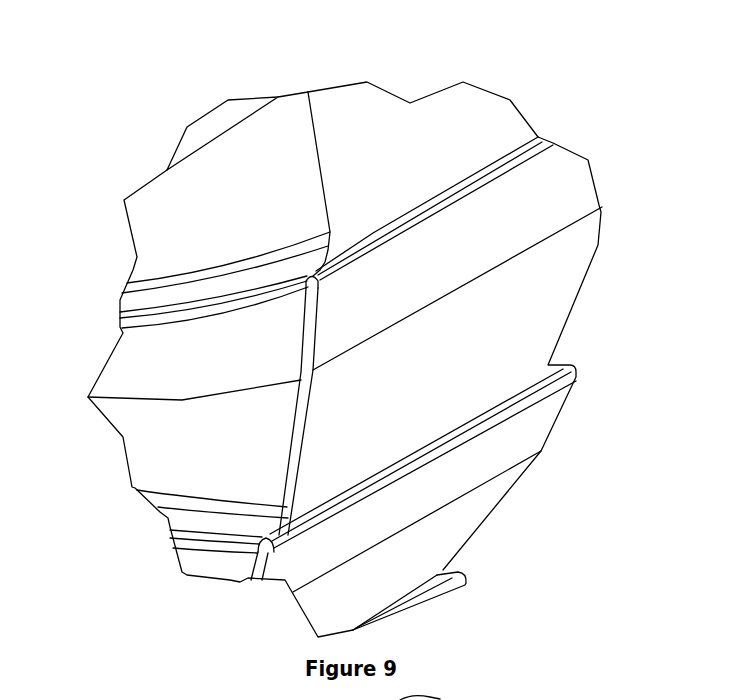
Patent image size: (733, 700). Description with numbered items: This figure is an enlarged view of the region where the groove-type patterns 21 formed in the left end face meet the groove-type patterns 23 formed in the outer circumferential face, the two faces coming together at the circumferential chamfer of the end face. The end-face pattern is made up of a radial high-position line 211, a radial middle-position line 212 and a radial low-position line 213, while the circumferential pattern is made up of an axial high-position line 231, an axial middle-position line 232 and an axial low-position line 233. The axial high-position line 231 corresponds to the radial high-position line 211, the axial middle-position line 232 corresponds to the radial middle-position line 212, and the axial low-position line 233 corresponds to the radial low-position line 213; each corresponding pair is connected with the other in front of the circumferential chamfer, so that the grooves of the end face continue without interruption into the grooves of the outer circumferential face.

The groove-type pattern in the left end face 21 is at (210, 445).
The radial high-position line 211 is at (182, 400).
The radial middle-position line 212 is at (228, 310).
The radial low-position line 213 is at (158, 315).
The groove-type pattern in the outer circumferential face 23 is at (478, 363).
The axial high-position line 231 is at (497, 265).
The axial middle-position line 232 is at (433, 218).
The axial low-position line 233 is at (373, 233).